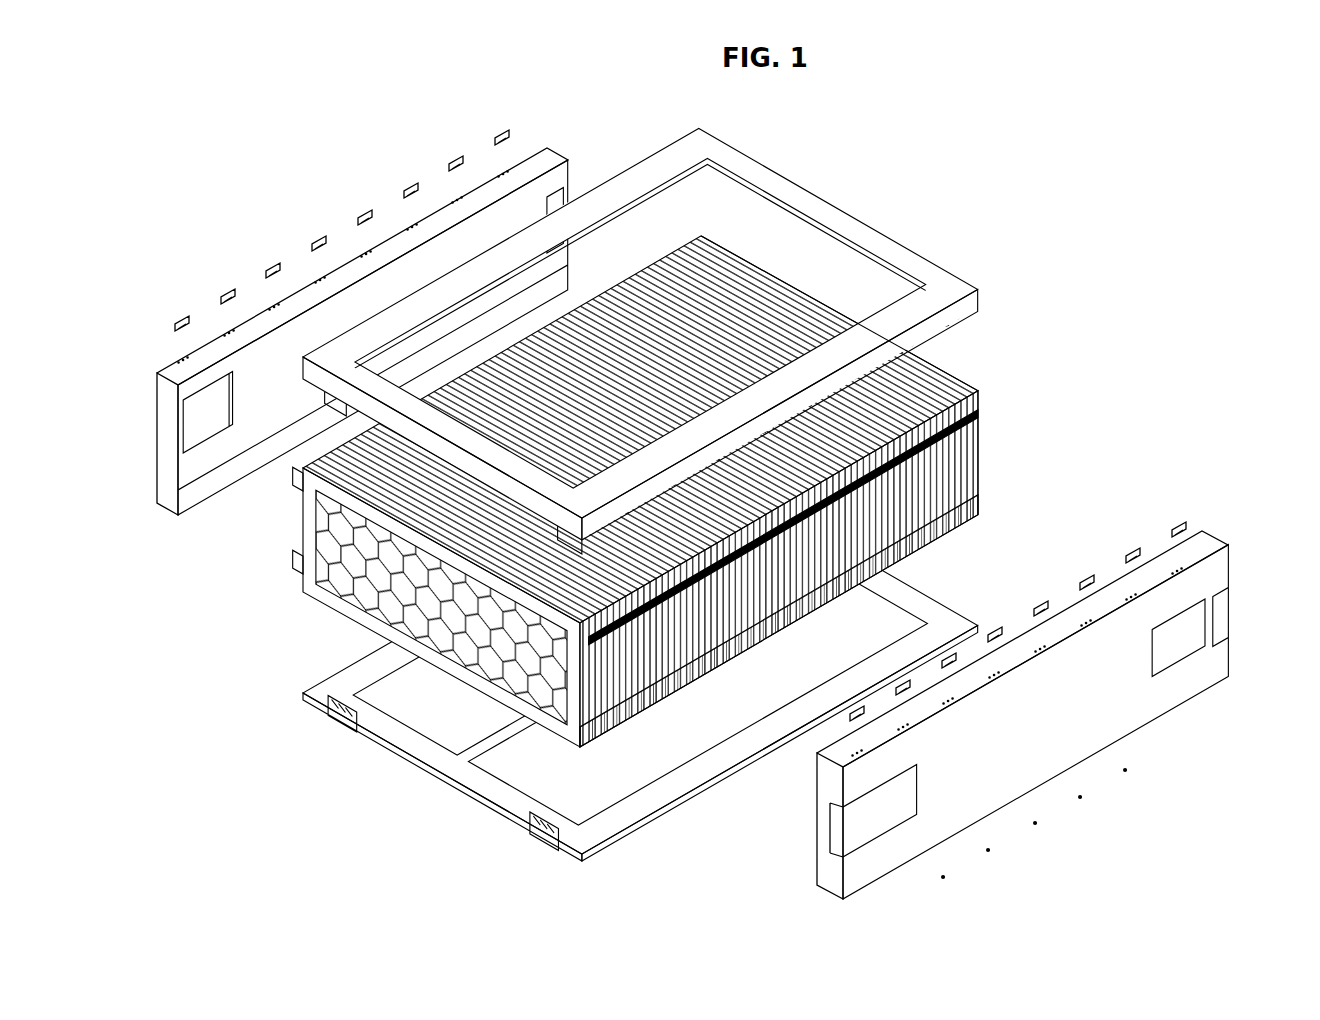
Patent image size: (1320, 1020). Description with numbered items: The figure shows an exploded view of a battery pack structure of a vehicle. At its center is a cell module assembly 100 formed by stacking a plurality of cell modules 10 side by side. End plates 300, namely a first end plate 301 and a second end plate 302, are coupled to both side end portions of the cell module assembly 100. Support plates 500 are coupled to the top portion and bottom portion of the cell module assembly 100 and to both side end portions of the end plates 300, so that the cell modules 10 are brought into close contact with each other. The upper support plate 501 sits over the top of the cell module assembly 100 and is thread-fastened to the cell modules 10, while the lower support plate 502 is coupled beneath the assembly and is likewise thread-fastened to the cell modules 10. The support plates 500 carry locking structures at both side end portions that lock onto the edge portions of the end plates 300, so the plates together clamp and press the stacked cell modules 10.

The cell module 10 is at (975, 483).
The cell module assembly 100 is at (710, 491).
The end plates 300 is at (728, 541).
The first end plate 301 is at (303, 597).
The second end plate 302 is at (965, 392).
The support plates 500 is at (746, 504).
The support plate 501 is at (880, 246).
The support plate 502 is at (327, 722).